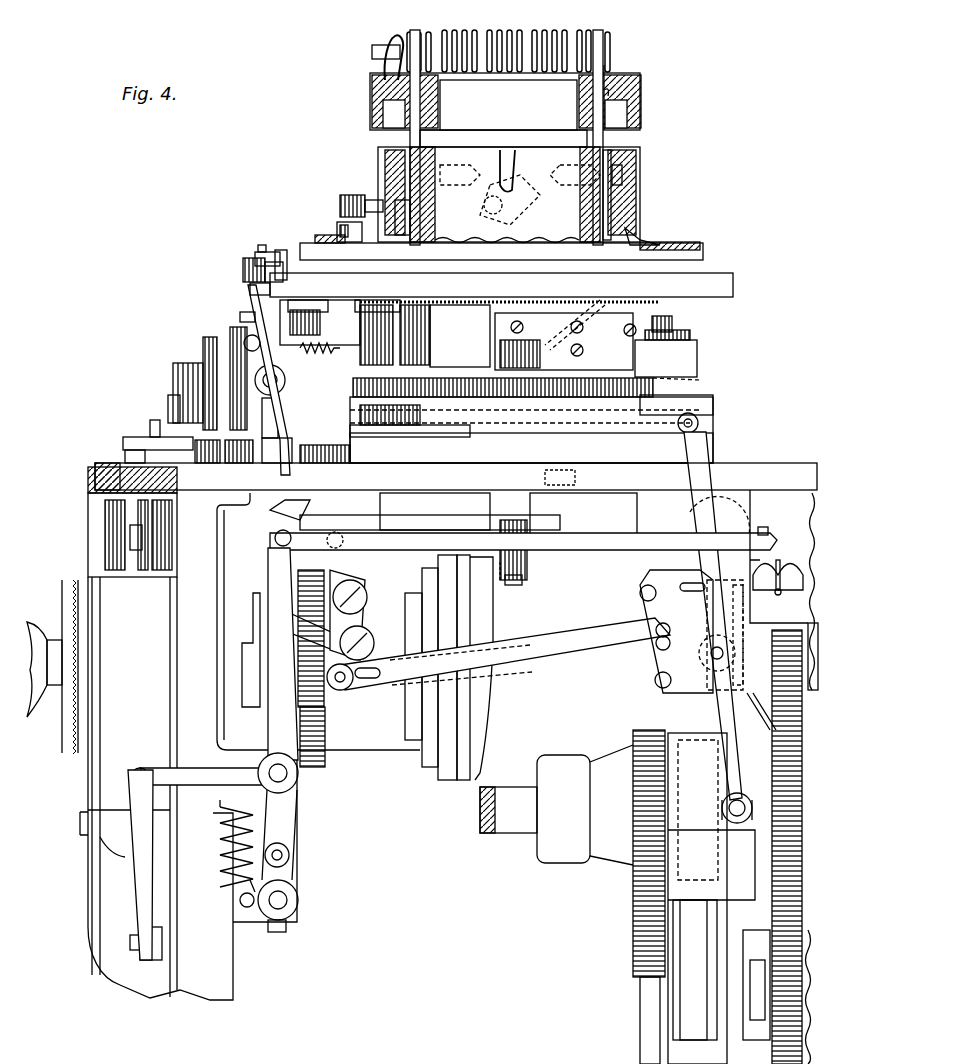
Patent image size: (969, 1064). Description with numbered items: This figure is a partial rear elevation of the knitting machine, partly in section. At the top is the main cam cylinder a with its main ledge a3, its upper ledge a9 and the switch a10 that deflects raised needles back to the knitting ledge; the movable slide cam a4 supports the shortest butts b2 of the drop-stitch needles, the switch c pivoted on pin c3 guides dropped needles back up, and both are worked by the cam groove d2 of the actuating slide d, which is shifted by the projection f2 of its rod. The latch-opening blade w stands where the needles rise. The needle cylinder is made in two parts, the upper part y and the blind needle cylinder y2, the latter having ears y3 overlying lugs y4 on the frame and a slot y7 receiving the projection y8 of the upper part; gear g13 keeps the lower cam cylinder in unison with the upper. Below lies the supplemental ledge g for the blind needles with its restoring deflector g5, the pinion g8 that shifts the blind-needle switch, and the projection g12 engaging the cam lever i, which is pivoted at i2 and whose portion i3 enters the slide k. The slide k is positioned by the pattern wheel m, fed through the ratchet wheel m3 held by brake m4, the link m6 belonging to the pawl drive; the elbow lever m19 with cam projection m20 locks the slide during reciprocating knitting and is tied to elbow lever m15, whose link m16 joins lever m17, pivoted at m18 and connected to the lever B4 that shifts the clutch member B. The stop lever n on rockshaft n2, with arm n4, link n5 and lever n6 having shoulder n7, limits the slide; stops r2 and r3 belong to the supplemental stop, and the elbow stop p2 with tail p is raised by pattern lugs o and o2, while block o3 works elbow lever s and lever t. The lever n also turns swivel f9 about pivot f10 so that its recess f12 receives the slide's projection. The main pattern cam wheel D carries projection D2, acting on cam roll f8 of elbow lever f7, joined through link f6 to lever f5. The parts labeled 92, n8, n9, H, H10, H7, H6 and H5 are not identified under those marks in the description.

The latch engaging device w is at (395, 42).
The tail p is at (604, 88).
The needle cylinder part for regular knitting needles y is at (430, 108).
The blind needle cylinder y2 is at (430, 152).
The inward projection y8 is at (495, 160).
The slot y7 is at (512, 160).
The upper ledge a9 is at (570, 165).
The switch a10 is at (643, 160).
The main cam cylinder a is at (640, 197).
The main ledge a3 is at (517, 200).
The slide member a4 is at (493, 215).
The switch c is at (412, 226).
The pin c3 is at (345, 200).
The cam groove d2 is at (337, 232).
The actuating device d is at (315, 240).
The butts b2 is at (640, 242).
The table plate 92 is at (590, 302).
The slide member k is at (330, 318).
The engaging portion i3 is at (308, 301).
The cam member i is at (394, 322).
The pivot i2 is at (430, 345).
The deflector g5 is at (460, 336).
The supplemental ledge g is at (495, 340).
The pinion g8 is at (697, 345).
The projection g12 is at (672, 324).
The gear g13 is at (700, 382).
The link m16 is at (522, 425).
The elbow lever m15 is at (400, 430).
The lever m17 is at (710, 447).
The stop r3 is at (310, 352).
The rockshaft n2 is at (286, 380).
The arm n4 is at (279, 402).
The stop lever n is at (250, 298).
The pin n8 is at (252, 335).
The stop n9 is at (250, 290).
The stop r2 is at (240, 316).
The projection f2 is at (256, 252).
The recess f12 is at (278, 250).
The pivotal connection f10 is at (243, 266).
The swivel member f9 is at (265, 274).
The pattern wheel m is at (230, 336).
The ratchet wheel m3 is at (203, 350).
The brake m4 is at (173, 373).
The link m6 is at (168, 398).
The elbow lever or stop p2 is at (152, 420).
The pivoted lever t is at (123, 440).
The shoulder n7 is at (125, 458).
The lever n6 is at (228, 463).
The cam projection m20 is at (262, 463).
The link n5 is at (282, 463).
The controlling device m19 is at (320, 463).
The ears y3 is at (430, 515).
The lugs y4 is at (610, 500).
The elbow lever f7 is at (500, 525).
The cam roll f8 is at (522, 568).
The projection D2 is at (505, 582).
The elbow lever s is at (95, 510).
The projection o2 is at (160, 530).
The pattern block o3 is at (142, 545).
The pattern lug o is at (160, 572).
The link f6 is at (262, 542).
The pivoted lever f5 is at (290, 511).
The main pattern cam wheel D is at (449, 667).
The pivot m18 is at (655, 680).
The frame H5 is at (760, 935).
The clutch member B is at (700, 765).
The lever B4 is at (737, 792).
The shaft H is at (535, 809).
The gear H10 is at (633, 745).
The stem H7 is at (640, 935).
The rod H6 is at (707, 920).